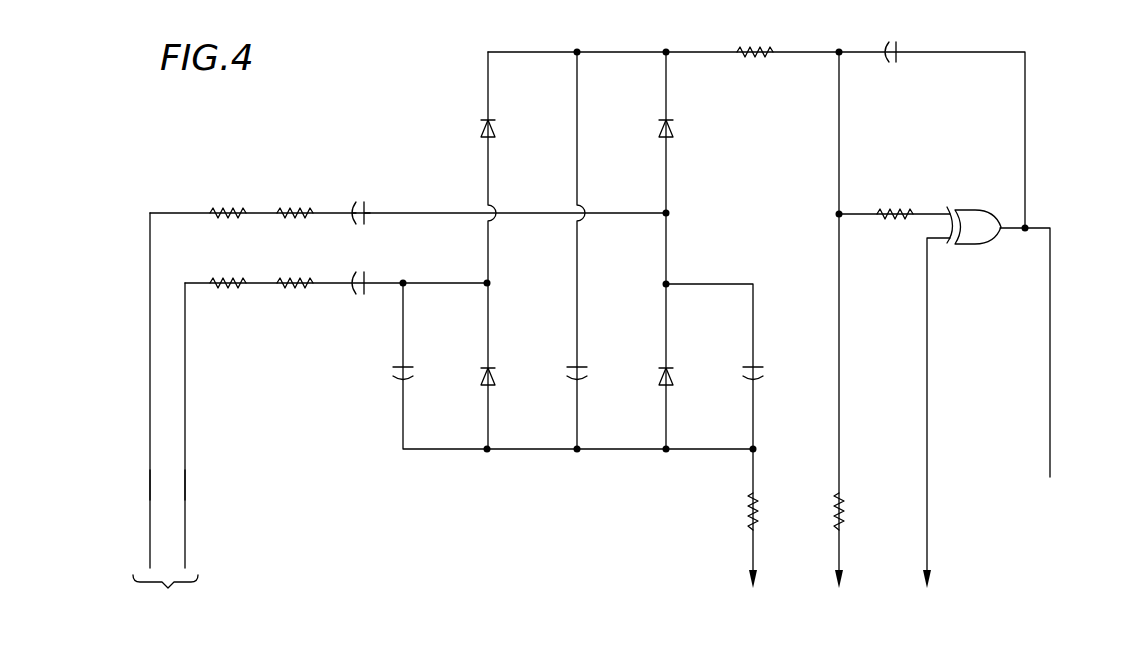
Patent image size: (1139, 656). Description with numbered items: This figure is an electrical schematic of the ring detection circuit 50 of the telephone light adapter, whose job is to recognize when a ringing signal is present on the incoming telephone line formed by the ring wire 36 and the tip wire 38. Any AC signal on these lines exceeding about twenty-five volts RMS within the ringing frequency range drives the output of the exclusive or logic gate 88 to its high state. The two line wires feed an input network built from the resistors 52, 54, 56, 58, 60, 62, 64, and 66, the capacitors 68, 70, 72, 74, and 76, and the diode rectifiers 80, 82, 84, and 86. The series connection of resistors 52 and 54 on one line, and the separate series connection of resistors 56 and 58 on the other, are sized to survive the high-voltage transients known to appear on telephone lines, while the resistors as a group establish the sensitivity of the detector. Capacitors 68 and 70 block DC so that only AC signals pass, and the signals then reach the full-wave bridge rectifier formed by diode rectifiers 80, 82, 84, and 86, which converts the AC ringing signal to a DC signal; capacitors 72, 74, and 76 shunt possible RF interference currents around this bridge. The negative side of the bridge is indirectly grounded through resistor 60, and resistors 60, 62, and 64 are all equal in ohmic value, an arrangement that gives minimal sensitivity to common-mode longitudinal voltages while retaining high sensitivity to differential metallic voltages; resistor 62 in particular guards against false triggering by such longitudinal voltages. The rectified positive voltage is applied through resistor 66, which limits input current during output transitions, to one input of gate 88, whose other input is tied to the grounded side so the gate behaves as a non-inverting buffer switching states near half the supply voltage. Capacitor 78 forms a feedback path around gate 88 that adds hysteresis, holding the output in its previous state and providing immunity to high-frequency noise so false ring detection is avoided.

The ring wire 36 is at (150, 486).
The tip wire 38 is at (186, 490).
The ring detection circuit 50 is at (390, 118).
The resistor 52 is at (212, 207).
The resistor 54 is at (306, 207).
The resistor 56 is at (214, 277).
The resistor 58 is at (310, 277).
The resistor 60 is at (750, 62).
The resistor 62 is at (751, 516).
The resistor 64 is at (838, 526).
The resistor 66 is at (893, 208).
The capacitor 68 is at (368, 205).
The capacitor 70 is at (368, 276).
The capacitor 72 is at (405, 365).
The capacitor 74 is at (760, 366).
The capacitor 76 is at (582, 366).
The capacitor 78 is at (900, 58).
The diode rectifier 80 is at (497, 128).
The diode rectifier 82 is at (676, 128).
The diode rectifier 84 is at (492, 366).
The diode rectifier 86 is at (672, 378).
The exclusive or logic gate 88 is at (984, 209).